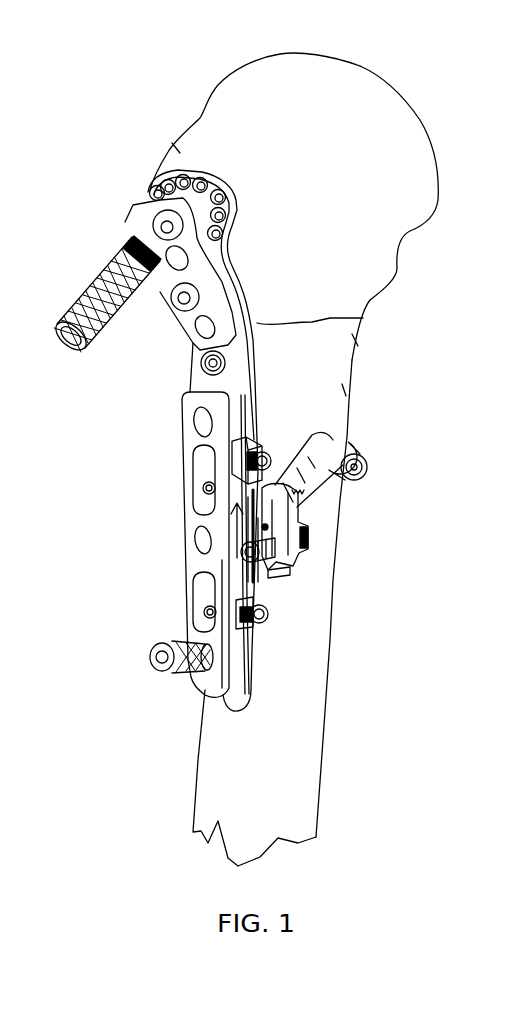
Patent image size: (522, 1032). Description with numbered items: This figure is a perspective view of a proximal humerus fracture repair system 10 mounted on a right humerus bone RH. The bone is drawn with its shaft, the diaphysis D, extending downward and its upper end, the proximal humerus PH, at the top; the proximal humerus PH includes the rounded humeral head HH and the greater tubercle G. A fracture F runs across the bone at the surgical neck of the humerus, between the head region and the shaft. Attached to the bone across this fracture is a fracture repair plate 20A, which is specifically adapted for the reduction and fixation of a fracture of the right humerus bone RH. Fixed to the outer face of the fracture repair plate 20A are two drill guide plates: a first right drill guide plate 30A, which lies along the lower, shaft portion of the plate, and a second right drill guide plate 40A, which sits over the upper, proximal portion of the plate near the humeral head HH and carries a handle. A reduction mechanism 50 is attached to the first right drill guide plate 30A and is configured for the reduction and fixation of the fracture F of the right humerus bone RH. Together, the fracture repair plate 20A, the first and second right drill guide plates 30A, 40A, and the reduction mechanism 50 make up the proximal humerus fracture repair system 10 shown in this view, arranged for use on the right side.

The proximal humerus PH is at (292, 52).
The humeral head HH is at (410, 118).
The greater tubercle G is at (176, 148).
The fracture F is at (310, 322).
The right humerus bone RH is at (356, 340).
The diaphysis D is at (345, 392).
The proximal humerus fracture repair system 10 is at (102, 533).
The fracture repair plate 20A is at (260, 372).
The first right drill guide plate 30A is at (182, 442).
The second right drill guide plate 40A is at (178, 330).
The reduction mechanism 50 is at (350, 617).